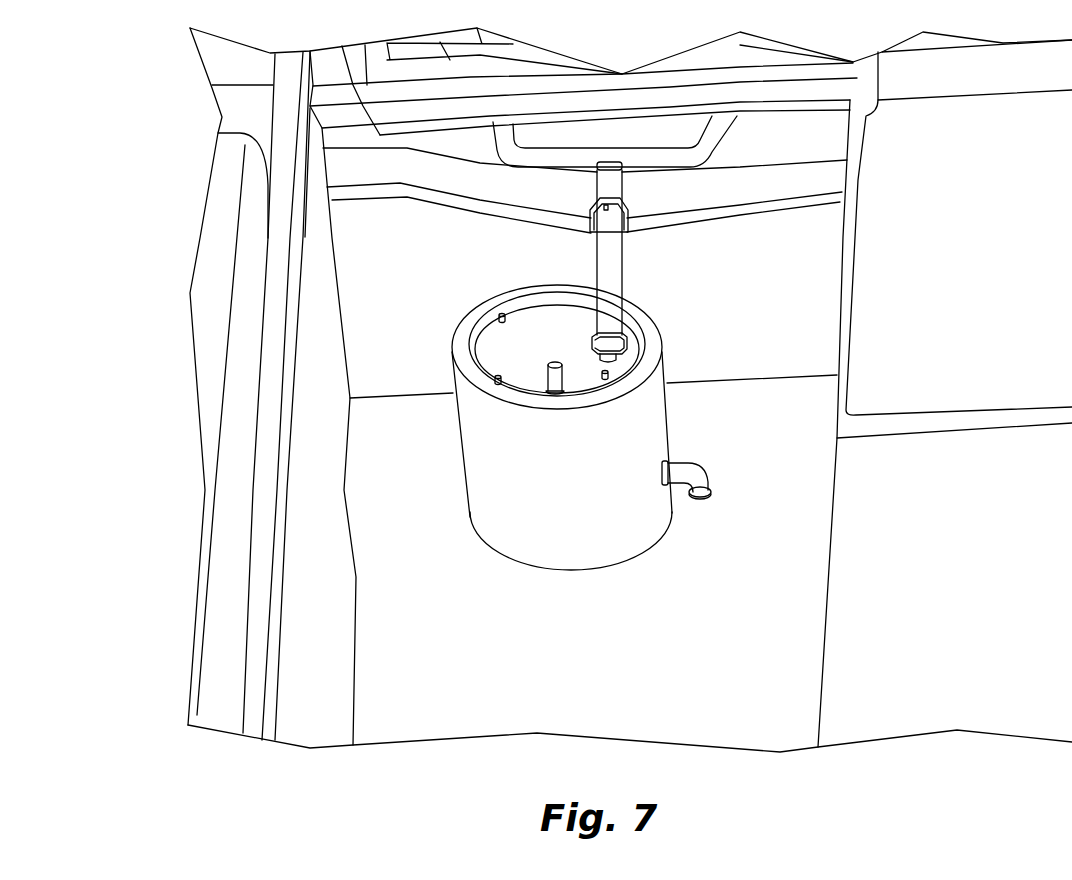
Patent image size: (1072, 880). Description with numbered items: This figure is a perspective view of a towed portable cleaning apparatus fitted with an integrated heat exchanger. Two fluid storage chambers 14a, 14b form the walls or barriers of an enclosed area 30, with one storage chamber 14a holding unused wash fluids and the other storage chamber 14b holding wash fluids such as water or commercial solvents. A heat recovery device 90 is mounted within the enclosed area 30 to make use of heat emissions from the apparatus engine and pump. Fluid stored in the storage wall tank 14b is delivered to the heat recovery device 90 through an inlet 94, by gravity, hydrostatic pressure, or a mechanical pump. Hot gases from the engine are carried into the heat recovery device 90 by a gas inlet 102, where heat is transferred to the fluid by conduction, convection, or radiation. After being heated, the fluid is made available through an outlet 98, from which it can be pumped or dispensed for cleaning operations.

The storage chamber 14a is at (328, 660).
The storage chamber 14b is at (853, 685).
The enclosed area 30 is at (488, 708).
The heat recovery device 90 is at (607, 542).
The inlet 94 is at (685, 472).
The outlet 98 is at (548, 380).
The gas inlet 102 is at (608, 247).